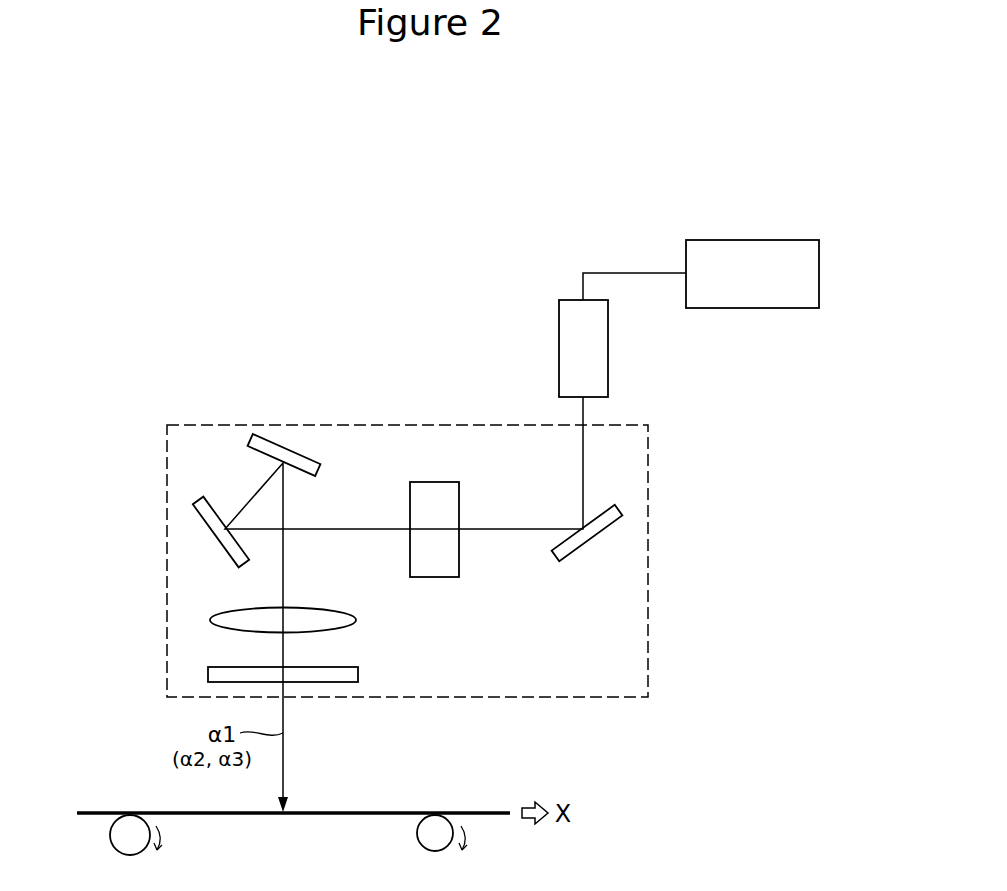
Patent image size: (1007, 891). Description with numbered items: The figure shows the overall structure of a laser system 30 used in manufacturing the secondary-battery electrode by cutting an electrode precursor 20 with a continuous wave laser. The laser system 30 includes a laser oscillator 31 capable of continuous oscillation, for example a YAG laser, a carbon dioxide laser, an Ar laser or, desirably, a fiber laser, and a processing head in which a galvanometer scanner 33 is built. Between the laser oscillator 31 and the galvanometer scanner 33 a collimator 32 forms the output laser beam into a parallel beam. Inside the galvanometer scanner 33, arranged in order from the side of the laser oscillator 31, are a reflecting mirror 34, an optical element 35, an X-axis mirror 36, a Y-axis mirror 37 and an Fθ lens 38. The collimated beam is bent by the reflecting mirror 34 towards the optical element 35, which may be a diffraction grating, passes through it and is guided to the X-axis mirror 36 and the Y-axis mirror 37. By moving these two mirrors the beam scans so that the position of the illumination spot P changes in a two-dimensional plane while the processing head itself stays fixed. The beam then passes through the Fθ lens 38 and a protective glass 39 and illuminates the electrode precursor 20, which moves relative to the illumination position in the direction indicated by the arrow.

The electrode precursor 20 is at (352, 815).
The laser system 30 is at (748, 150).
The laser oscillator 31 is at (752, 252).
The collimator 32 is at (593, 350).
The galvanometer scanner 33 is at (198, 414).
The reflecting mirror 34 is at (604, 528).
The optical element 35 is at (435, 496).
The X-axis mirror 36 is at (213, 522).
The Y-axis mirror 37 is at (302, 462).
The Fθ lens 38 is at (347, 617).
The protective glass 39 is at (348, 675).
The irradiation position P is at (288, 810).